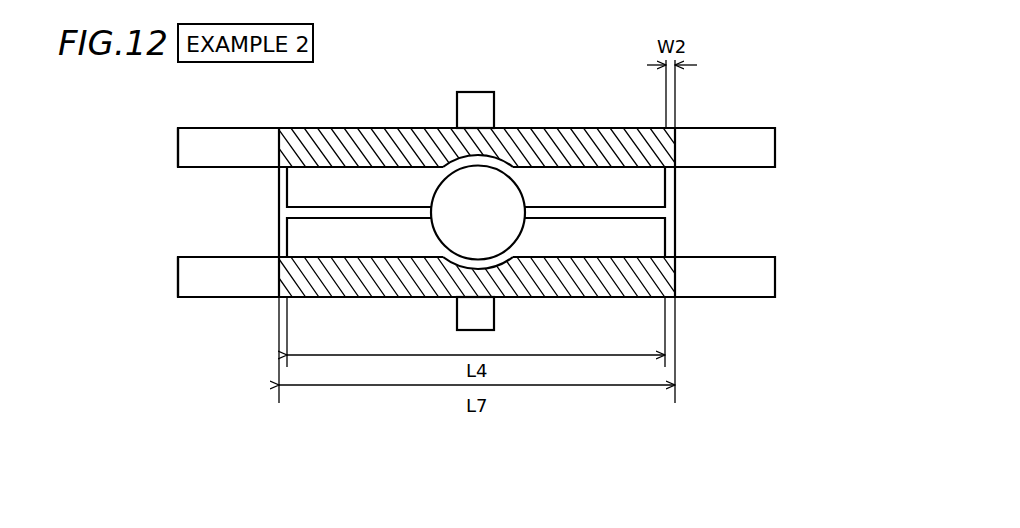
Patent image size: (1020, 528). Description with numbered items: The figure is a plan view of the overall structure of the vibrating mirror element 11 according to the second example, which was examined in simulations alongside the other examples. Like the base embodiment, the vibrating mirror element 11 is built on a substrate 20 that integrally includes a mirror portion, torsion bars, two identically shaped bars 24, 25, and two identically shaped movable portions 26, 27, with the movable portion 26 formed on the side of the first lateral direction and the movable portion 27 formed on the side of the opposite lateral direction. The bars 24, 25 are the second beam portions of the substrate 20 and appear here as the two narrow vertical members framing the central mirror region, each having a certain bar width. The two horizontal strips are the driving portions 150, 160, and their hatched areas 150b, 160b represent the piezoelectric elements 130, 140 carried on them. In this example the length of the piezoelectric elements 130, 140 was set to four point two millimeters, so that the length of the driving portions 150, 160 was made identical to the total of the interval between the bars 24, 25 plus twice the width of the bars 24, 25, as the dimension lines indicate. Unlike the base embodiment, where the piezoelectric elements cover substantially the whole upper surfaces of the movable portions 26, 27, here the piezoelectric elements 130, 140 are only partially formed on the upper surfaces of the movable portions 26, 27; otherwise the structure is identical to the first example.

The vibrating mirror element 11 is at (788, 93).
The substrate 20 is at (226, 210).
The bar 24 is at (279, 190).
The bar 25 is at (672, 193).
The movable portion 26 is at (249, 142).
The movable portion 27 is at (247, 289).
The driving portion 150 is at (797, 148).
The driving portion 160 is at (797, 285).
The piezoelectric element portion 150b is at (580, 139).
The piezoelectric element portion 160b is at (610, 287).
The piezoelectric element 130 is at (471, 175).
The piezoelectric element 140 is at (471, 250).